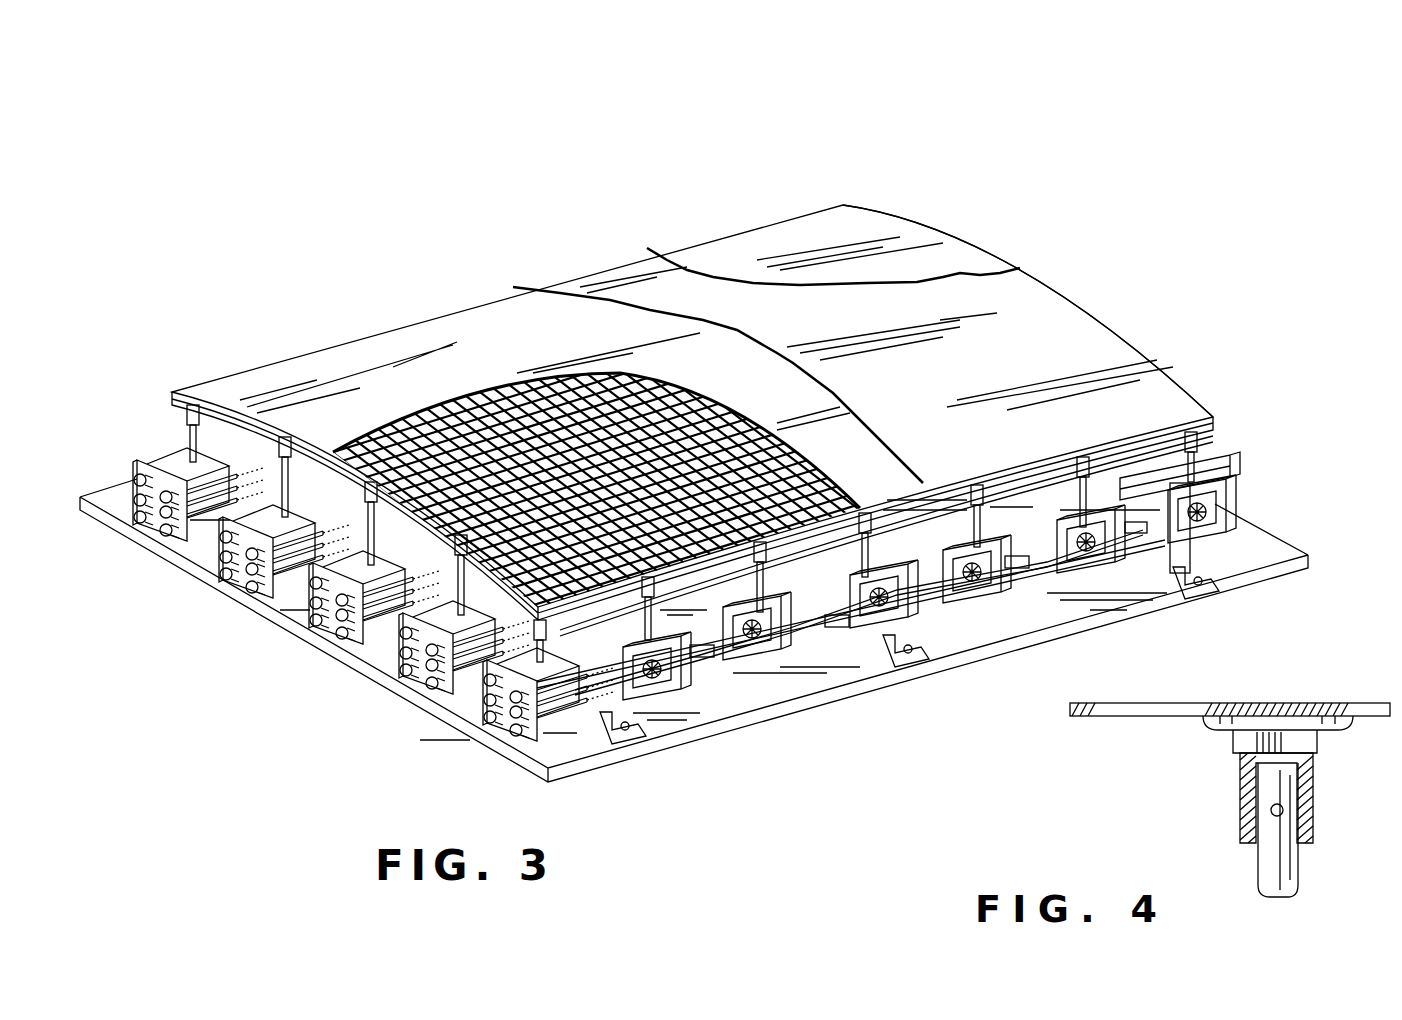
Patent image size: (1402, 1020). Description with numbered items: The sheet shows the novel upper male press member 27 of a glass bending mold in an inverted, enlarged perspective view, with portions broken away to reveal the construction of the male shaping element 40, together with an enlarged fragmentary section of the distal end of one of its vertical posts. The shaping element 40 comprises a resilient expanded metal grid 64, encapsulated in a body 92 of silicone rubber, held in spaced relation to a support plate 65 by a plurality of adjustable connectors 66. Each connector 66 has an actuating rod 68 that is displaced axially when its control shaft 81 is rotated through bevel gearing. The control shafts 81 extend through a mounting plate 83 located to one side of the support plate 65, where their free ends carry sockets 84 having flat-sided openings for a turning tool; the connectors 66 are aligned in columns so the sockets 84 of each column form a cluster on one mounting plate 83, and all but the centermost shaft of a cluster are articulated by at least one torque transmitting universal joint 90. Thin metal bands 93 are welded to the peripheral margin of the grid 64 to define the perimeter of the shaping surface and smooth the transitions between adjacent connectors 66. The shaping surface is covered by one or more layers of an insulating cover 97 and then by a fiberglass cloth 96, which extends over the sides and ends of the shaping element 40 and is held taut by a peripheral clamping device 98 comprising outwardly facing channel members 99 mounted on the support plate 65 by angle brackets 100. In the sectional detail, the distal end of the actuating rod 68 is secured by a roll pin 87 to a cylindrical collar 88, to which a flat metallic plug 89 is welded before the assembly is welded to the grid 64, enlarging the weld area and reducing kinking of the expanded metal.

In FIG. 3, the upper male press member 27 is at (1090, 266).
In FIG. 3, the male shaping element 40 is at (288, 348).
In FIG. 3, the expanded metal grid 64 is at (430, 432).
In FIG. 4, the expanded metal grid 64 is at (1278, 705).
In FIG. 3, the support plate 65 is at (722, 716).
In FIG. 3, the adjustable connector 66 is at (170, 456).
In FIG. 3, the actuating rod 68 is at (197, 432).
In FIG. 4, the actuating rod 68 is at (1265, 862).
In FIG. 3, the control shaft 81 is at (215, 527).
In FIG. 3, the mounting plate 83 is at (367, 627).
In FIG. 3, the socket 84 is at (450, 688).
In FIG. 4, the roll pin 87 is at (1285, 811).
In FIG. 3, the cylindrical collar 88 is at (657, 580).
In FIG. 4, the cylindrical collar 88 is at (1243, 787).
In FIG. 4, the flat metallic plug 89 is at (1228, 727).
In FIG. 3, the universal joint 90 is at (1013, 590).
In FIG. 3, the body of silicone rubber 92 is at (478, 318).
In FIG. 3, the metal bands 93 is at (375, 515).
In FIG. 3, the fiberglass cloth 96 is at (745, 247).
In FIG. 3, the insulating cover 97 is at (588, 277).
In FIG. 3, the peripheral clamping device 98 is at (1240, 452).
In FIG. 3, the channel members 99 is at (1217, 438).
In FIG. 3, the angle brackets 100 is at (1195, 558).